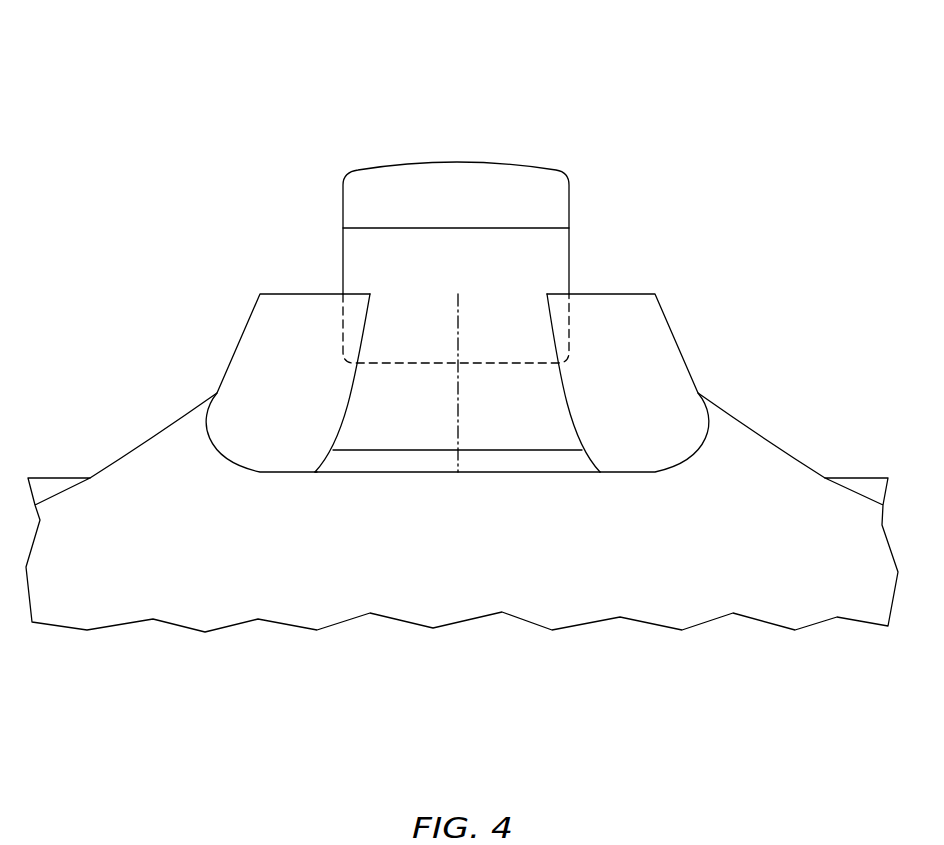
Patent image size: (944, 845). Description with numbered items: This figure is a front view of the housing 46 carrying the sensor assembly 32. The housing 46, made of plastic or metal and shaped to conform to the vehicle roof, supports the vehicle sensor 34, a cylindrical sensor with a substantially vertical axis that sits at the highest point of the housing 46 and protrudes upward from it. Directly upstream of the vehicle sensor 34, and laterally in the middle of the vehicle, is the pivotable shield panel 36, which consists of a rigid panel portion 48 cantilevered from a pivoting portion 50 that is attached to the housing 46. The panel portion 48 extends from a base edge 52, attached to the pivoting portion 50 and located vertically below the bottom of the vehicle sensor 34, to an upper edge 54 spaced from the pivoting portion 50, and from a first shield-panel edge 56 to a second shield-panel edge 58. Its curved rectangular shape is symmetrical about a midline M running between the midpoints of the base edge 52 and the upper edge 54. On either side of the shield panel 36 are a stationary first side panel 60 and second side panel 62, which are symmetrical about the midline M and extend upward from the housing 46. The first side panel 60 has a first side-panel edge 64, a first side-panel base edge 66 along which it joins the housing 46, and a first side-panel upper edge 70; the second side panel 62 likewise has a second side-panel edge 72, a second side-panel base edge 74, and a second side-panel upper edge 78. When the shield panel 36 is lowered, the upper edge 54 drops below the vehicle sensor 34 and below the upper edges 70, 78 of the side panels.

The sensor assembly 32 is at (270, 58).
The vehicle sensor 34 is at (572, 210).
The shield panel 36 is at (372, 430).
The housing 46 is at (783, 450).
The panel portion 48 is at (528, 422).
The pivoting portion 50 is at (518, 460).
The base edge 52 is at (408, 452).
The upper edge 54 is at (383, 294).
The first shield-panel edge 56 is at (558, 385).
The second shield-panel edge 58 is at (351, 404).
The first side panel 60 is at (657, 335).
The second side panel 62 is at (272, 337).
The first side-panel edge 64 is at (563, 392).
The first side-panel base edge 66 is at (673, 468).
The first side-panel upper edge 70 is at (637, 294).
The second side-panel edge 72 is at (353, 388).
The second side-panel base edge 74 is at (240, 466).
The second side-panel upper edge 78 is at (270, 291).
The midline M is at (458, 430).